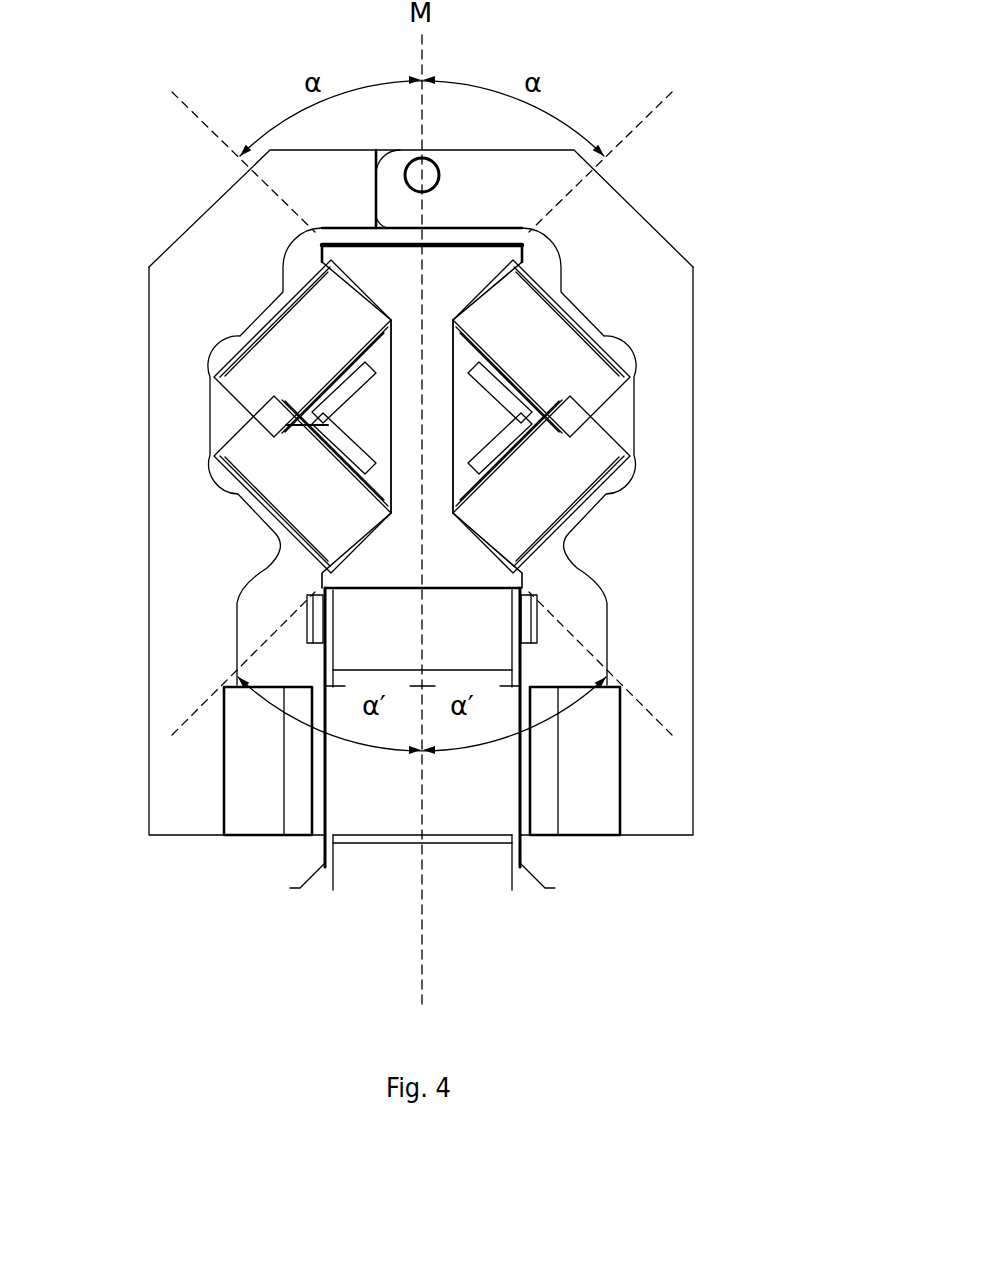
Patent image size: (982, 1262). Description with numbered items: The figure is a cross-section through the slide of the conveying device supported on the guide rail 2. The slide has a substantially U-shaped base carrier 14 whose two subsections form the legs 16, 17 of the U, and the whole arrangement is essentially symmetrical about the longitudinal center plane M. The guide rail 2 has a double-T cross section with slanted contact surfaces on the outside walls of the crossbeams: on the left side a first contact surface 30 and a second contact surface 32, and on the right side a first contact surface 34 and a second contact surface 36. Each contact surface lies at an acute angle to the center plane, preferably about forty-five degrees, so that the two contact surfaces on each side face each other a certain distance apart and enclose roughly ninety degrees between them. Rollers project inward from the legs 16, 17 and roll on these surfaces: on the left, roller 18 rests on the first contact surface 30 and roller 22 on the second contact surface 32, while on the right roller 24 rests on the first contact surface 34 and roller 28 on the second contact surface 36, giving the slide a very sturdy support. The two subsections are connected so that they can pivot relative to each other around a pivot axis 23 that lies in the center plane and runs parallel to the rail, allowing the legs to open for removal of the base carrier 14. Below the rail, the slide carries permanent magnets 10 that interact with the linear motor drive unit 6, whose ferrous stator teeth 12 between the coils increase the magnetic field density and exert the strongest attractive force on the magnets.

The guide rail 2 is at (433, 422).
The linear motor drive unit 6 is at (395, 803).
The permanent magnets 10 is at (300, 817).
The stator teeth 12 is at (322, 793).
The base carrier 14 is at (172, 330).
The leg 16 is at (172, 470).
The leg 17 is at (675, 470).
The roller 18 is at (252, 368).
The roller 22 is at (255, 470).
The pivot axis 23 is at (440, 175).
The roller 24 is at (562, 340).
The roller 28 is at (553, 487).
The first contact surface 30 is at (360, 293).
The second contact surface 32 is at (330, 555).
The first contact surface 34 is at (505, 273).
The second contact surface 36 is at (505, 548).